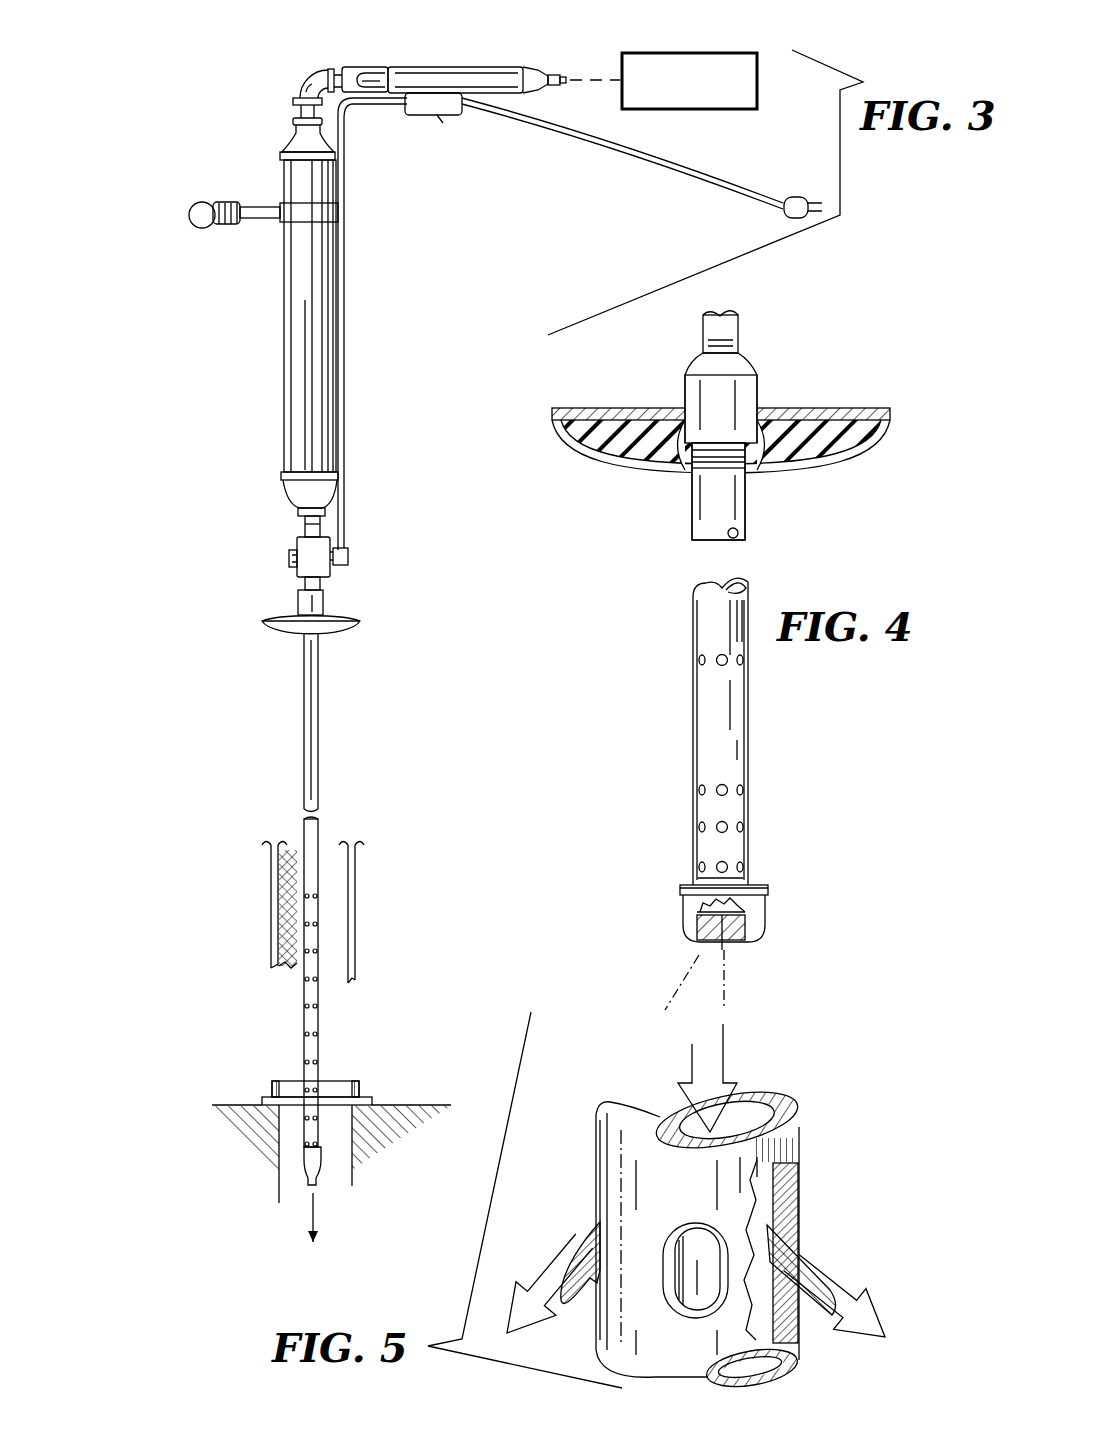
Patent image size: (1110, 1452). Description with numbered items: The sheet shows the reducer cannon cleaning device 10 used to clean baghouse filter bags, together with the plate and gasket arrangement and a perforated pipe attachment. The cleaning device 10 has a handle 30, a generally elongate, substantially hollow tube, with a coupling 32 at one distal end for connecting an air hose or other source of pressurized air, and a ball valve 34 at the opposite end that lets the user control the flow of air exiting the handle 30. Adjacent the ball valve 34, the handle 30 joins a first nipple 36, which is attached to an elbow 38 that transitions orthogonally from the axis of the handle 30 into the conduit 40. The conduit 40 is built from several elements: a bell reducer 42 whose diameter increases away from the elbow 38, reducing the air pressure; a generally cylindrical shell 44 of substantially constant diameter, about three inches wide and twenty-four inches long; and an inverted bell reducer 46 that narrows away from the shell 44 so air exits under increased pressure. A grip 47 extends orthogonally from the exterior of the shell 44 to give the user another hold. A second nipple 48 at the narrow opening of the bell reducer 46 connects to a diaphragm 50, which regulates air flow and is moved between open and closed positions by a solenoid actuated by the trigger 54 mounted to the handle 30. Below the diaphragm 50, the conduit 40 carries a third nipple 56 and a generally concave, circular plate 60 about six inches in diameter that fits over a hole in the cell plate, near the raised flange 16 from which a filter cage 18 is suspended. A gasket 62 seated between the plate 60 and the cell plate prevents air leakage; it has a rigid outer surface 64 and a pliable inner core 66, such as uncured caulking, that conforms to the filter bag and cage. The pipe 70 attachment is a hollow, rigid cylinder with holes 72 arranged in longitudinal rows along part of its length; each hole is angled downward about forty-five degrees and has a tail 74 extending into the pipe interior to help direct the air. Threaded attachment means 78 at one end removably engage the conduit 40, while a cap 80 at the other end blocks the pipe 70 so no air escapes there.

In FIG. 3, the cleaning device 10 is at (380, 285).
In FIG. 3, the flange 16 is at (360, 1083).
In FIG. 3, the filter cage 18 is at (405, 1105).
In FIG. 3, the handle 30 is at (490, 76).
In FIG. 3, the coupling 32 is at (556, 74).
In FIG. 3, the ball valve 34 is at (393, 57).
In FIG. 3, the first nipple 36 is at (320, 72).
In FIG. 3, the elbow 38 is at (300, 84).
In FIG. 3, the conduit 40 is at (282, 368).
In FIG. 3, the bell reducer 42 is at (302, 137).
In FIG. 3, the shell 44 is at (300, 301).
In FIG. 3, the bell reducer 46 is at (290, 491).
In FIG. 3, the grip 47 is at (203, 204).
In FIG. 3, the second nipple 48 is at (305, 525).
In FIG. 3, the diaphragm 50 is at (300, 562).
In FIG. 3, the trigger 54 is at (440, 118).
In FIG. 3, the third nipple 56 is at (305, 590).
In FIG. 3, the plate 60 is at (354, 623).
In FIG. 4, the plate 60 is at (862, 394).
In FIG. 4, the gasket 62 is at (822, 470).
In FIG. 4, the outer surface 64 is at (860, 447).
In FIG. 4, the inner core 66 is at (825, 414).
In FIG. 4, the pipe 70 is at (735, 733).
In FIG. 4, the holes 72 is at (745, 792).
In FIG. 5, the holes 72 is at (757, 1224).
In FIG. 5, the tail 74 is at (778, 1262).
In FIG. 4, the attachment means 78 is at (715, 457).
In FIG. 4, the cap 80 is at (770, 920).